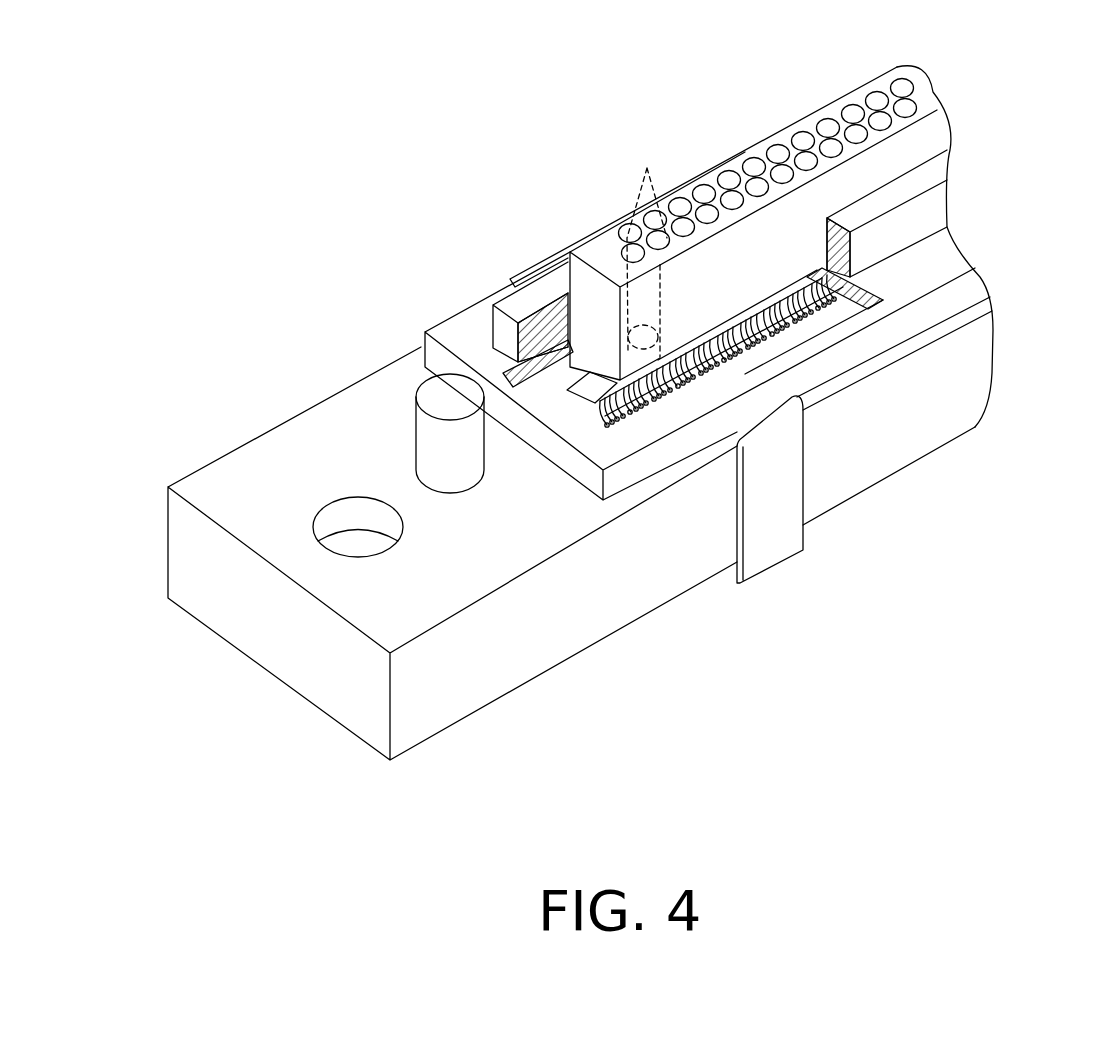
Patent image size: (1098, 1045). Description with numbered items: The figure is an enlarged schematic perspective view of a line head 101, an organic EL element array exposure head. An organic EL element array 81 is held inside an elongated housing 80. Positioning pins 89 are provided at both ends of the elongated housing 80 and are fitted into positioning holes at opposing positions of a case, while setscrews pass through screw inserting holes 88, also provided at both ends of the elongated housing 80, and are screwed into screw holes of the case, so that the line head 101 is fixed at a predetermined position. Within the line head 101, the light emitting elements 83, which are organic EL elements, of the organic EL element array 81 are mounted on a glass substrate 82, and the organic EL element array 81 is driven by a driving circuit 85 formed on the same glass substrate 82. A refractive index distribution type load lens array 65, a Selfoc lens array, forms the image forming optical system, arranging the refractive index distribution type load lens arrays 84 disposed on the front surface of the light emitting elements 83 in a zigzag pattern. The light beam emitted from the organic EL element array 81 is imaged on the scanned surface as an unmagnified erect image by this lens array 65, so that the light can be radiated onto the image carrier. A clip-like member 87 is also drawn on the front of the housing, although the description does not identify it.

The refractive index distribution type load lens arrays 84 is at (903, 91).
The refractive index distribution type load lens array (SLA) 65 is at (938, 133).
The elongated housing 80 is at (947, 262).
The positioning pins 89 is at (430, 437).
The screw inserting holes 88 is at (348, 542).
The driving circuit 85 is at (580, 393).
The organic EL element array 81 is at (617, 430).
The light emitting elements (organic EL elements) 83 is at (667, 425).
The glass substrate 82 is at (650, 420).
The fixing clip 87 is at (783, 500).
The line head 101 is at (710, 622).